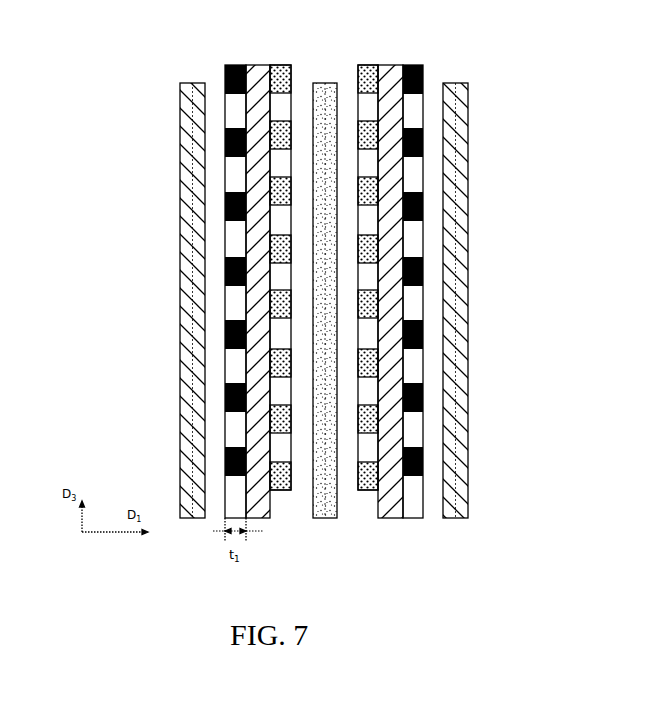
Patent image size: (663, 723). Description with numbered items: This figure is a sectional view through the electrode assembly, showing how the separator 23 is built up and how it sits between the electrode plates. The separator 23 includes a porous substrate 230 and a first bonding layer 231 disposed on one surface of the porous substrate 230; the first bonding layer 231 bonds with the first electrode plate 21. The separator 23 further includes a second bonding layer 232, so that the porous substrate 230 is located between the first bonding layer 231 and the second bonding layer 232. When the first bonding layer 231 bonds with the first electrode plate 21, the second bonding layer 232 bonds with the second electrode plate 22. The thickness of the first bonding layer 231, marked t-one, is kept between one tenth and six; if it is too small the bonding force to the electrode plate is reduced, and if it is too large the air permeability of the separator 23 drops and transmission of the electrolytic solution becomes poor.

The first electrode plate 21 is at (180, 164).
The second electrode plate 22 is at (328, 98).
The separator 23 is at (245, 262).
The first bonding layer 231 is at (228, 67).
The porous substrate 230 is at (254, 67).
The second bonding layer 232 is at (277, 261).